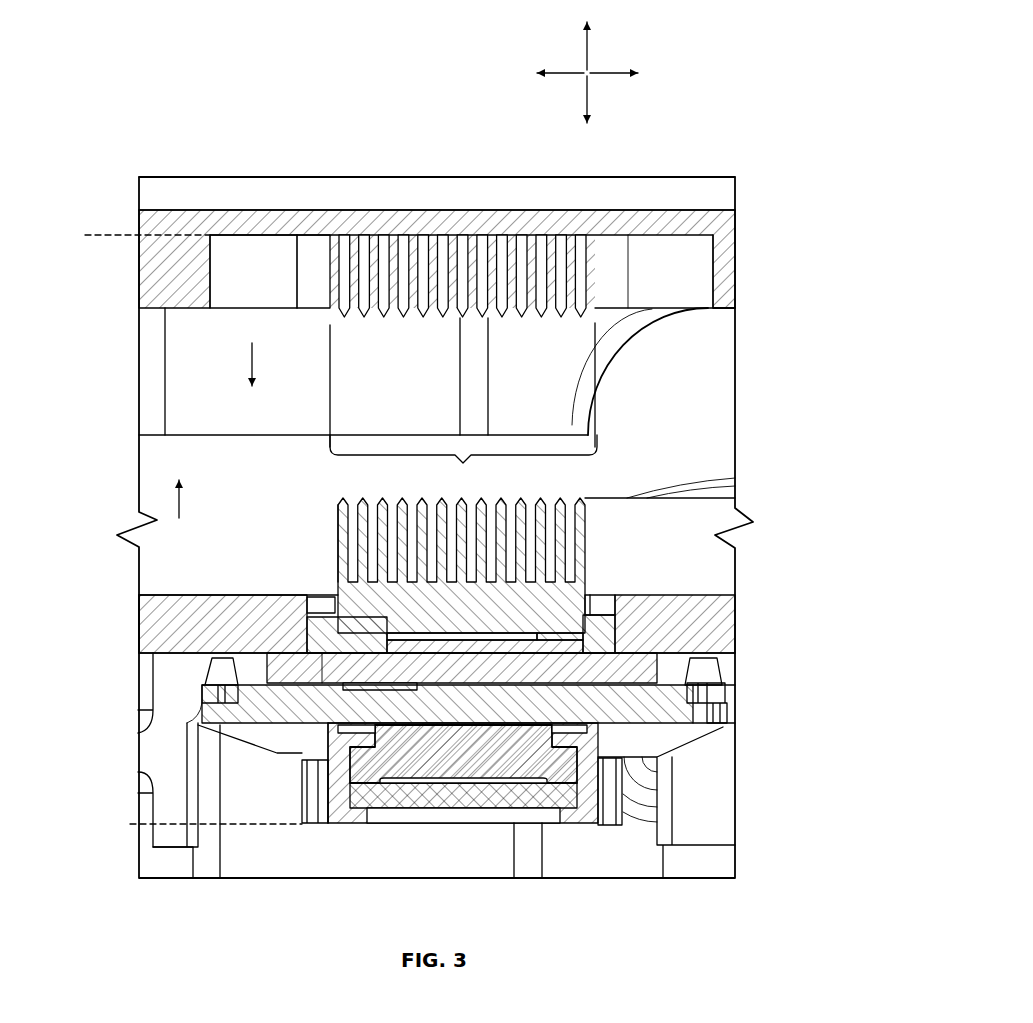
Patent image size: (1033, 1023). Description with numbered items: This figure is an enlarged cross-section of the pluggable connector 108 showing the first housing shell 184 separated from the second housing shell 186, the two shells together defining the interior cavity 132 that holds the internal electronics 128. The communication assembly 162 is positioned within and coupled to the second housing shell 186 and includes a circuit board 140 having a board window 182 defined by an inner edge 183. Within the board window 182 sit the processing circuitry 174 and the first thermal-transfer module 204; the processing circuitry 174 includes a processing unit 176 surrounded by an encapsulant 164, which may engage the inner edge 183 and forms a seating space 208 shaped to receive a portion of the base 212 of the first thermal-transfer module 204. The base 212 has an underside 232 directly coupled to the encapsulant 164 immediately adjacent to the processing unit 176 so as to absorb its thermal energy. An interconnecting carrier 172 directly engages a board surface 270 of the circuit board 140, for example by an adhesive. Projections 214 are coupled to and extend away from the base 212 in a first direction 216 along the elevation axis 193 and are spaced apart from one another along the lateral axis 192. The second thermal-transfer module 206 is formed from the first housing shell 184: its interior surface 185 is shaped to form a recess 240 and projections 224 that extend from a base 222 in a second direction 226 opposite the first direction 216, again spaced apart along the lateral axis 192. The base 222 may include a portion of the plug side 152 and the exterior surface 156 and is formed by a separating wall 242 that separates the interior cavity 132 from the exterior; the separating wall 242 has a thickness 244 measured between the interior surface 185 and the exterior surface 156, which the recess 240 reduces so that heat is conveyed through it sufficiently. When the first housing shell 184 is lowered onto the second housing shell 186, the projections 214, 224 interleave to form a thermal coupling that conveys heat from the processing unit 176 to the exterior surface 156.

The pluggable connector 108 is at (736, 116).
The internal electronics 128 is at (322, 655).
The interior cavity 132 is at (437, 377).
The circuit board 140 is at (149, 622).
The plug side 152 is at (356, 212).
The exterior surface 156 is at (286, 208).
The communication assembly 162 is at (138, 823).
The encapsulant 164 is at (327, 733).
The interconnecting carrier 172 is at (723, 718).
The processing circuitry 174 is at (296, 626).
The processing unit 176 is at (492, 647).
The board window 182 is at (601, 602).
The inner edge 183 is at (315, 612).
The first housing shell 184 is at (160, 177).
The interior surface 185 is at (241, 238).
The second housing shell 186 is at (163, 880).
The lateral axis 192 is at (610, 76).
The elevation axis 193 is at (589, 60).
The first thermal-transfer module 204 is at (585, 474).
The second thermal-transfer module 206 is at (463, 463).
The seating space 208 is at (588, 627).
The base 212 is at (563, 601).
The projections 214 is at (337, 514).
The first direction 216 is at (179, 505).
The base 222 is at (468, 208).
The projections 224 is at (595, 273).
The second direction 226 is at (252, 364).
The underside 232 is at (568, 637).
The recess 240 is at (310, 301).
The separating wall 242 is at (673, 214).
The thickness 244 is at (139, 211).
The board surface 270 is at (647, 658).